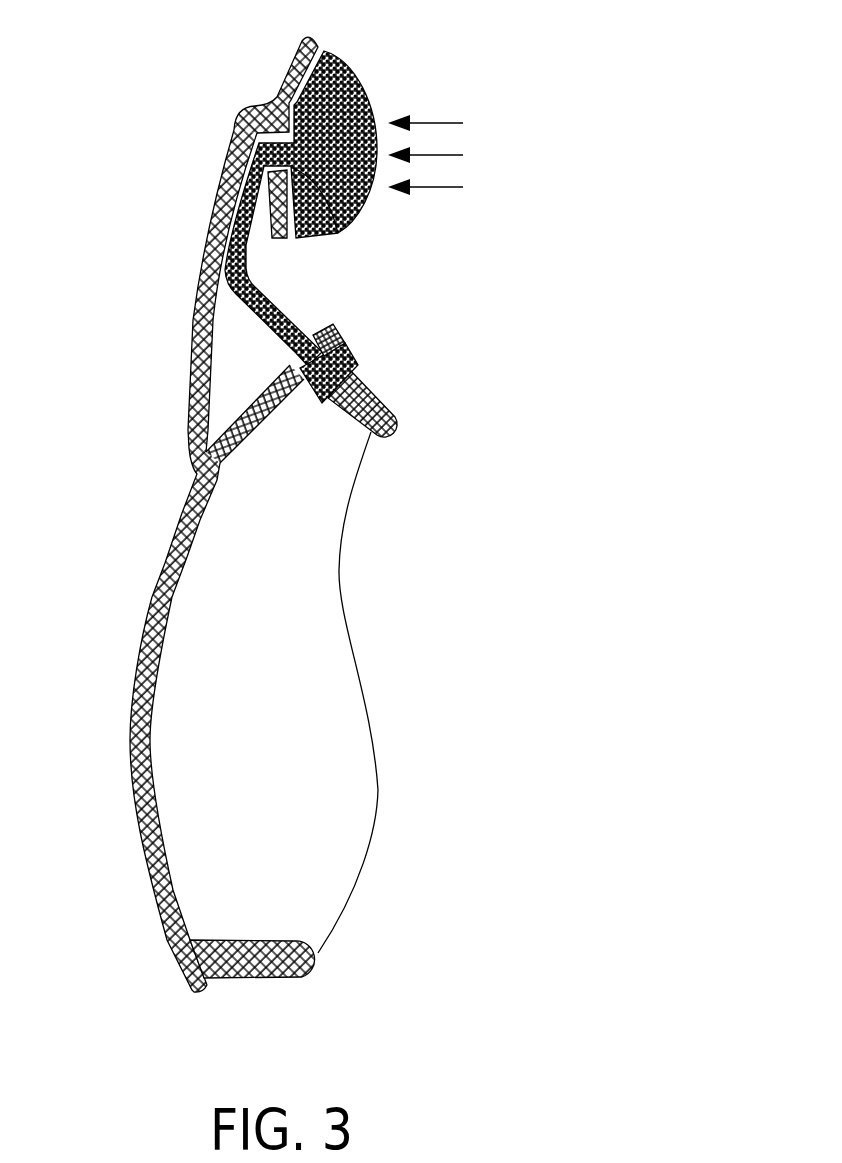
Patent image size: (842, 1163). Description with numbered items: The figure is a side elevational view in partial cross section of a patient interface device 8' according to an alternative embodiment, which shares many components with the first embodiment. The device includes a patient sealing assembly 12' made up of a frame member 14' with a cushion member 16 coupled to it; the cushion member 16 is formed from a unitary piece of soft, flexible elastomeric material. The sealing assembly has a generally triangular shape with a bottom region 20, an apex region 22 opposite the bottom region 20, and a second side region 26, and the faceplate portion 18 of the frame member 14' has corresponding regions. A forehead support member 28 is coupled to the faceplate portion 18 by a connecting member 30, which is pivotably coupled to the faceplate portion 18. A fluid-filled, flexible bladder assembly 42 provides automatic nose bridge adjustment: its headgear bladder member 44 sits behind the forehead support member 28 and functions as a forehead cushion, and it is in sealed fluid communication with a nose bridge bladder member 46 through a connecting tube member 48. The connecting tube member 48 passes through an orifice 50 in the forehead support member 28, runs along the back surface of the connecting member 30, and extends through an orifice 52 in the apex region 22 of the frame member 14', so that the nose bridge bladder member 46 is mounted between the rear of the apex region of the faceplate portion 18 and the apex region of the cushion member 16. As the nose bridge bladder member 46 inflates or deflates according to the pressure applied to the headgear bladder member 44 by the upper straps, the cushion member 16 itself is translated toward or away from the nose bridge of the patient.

The patient interface device 8' is at (248, 515).
The patient sealing assembly 12' is at (234, 807).
The frame member 14' is at (158, 522).
The cushion member 16 is at (392, 415).
The faceplate portion 18 is at (130, 723).
The bottom region 20 is at (192, 990).
The apex region 22 is at (319, 330).
The second side region 26 is at (322, 723).
The forehead support member 28 is at (292, 70).
The connecting member 30 is at (207, 229).
The bladder assembly 42 is at (358, 78).
The headgear bladder member 44 is at (347, 129).
The nose bridge bladder member 46 is at (357, 359).
The connecting tube member 48 is at (244, 277).
The orifice 50 is at (337, 231).
The orifice 52 is at (297, 359).